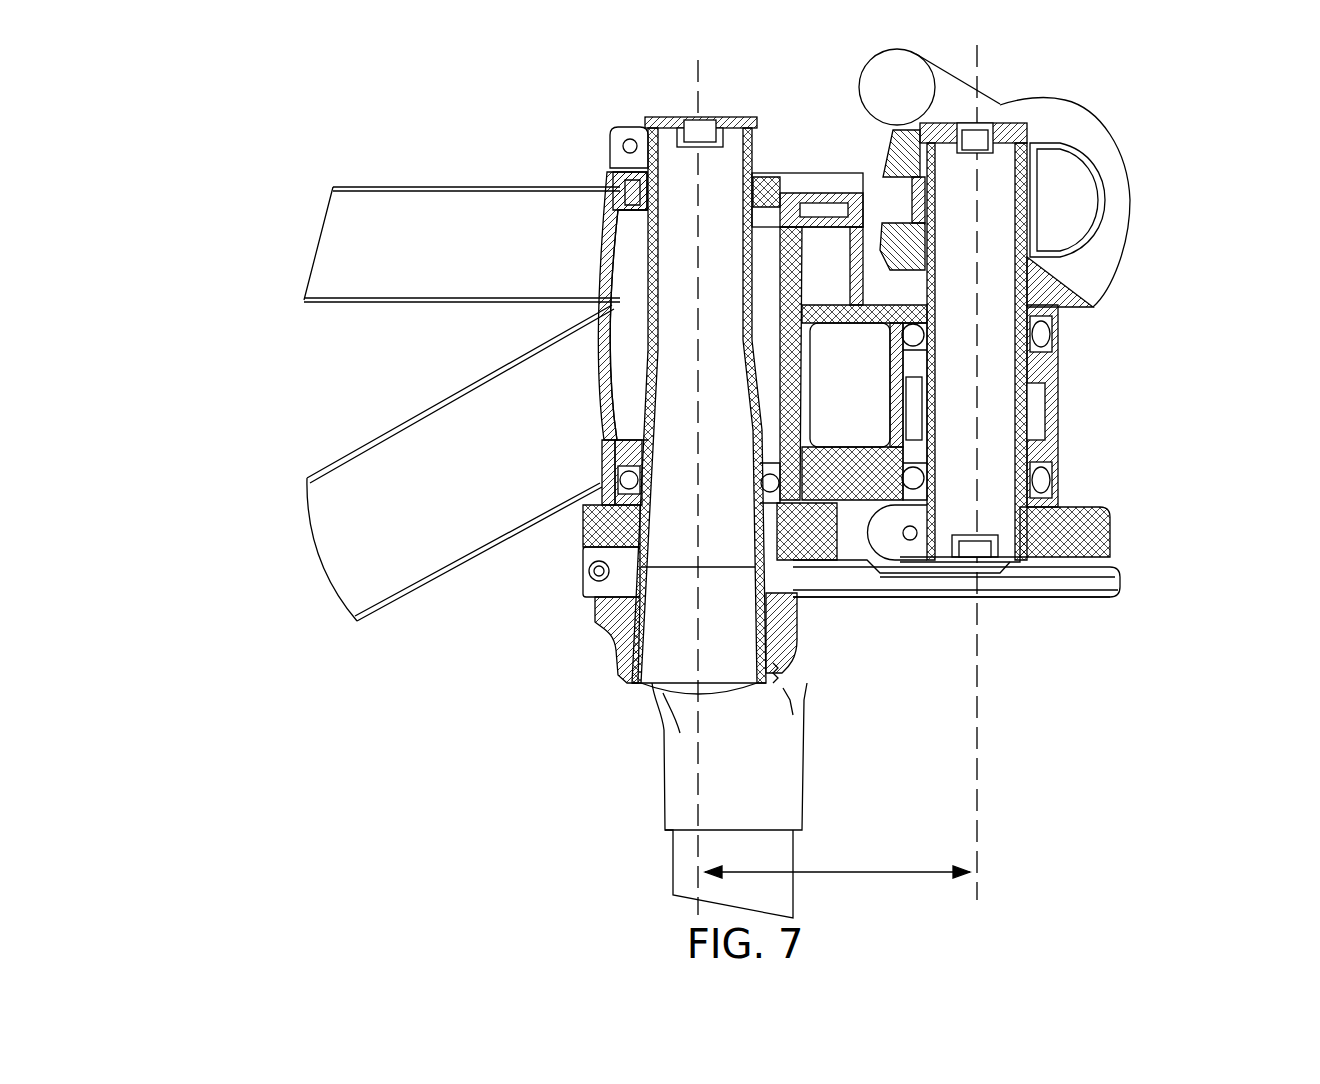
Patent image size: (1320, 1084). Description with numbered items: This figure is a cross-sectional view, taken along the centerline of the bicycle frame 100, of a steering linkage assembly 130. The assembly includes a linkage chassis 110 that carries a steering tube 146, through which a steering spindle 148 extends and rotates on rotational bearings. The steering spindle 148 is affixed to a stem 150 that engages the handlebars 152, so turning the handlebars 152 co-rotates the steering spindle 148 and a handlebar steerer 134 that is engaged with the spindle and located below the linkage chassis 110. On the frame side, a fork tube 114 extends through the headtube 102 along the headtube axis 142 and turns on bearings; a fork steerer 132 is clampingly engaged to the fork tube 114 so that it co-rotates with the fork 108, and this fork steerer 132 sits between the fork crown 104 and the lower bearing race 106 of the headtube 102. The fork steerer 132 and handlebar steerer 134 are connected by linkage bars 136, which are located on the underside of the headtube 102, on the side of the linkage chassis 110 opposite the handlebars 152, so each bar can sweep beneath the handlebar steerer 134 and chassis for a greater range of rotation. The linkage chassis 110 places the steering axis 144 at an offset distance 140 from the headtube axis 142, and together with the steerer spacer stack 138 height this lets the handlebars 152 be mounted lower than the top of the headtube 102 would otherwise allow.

The bicycle frame 100 is at (360, 298).
The headtube 102 is at (620, 202).
The fork crown 104 is at (790, 607).
The lower bearing race 106 is at (622, 481).
The fork 108 is at (677, 823).
The linkage chassis 110 is at (876, 305).
The fork tube 114 is at (648, 340).
The steering linkage assembly 130 is at (1072, 600).
The fork steerer 132 is at (593, 535).
The handlebar steerer 134 is at (1092, 532).
The linkage bars 136 is at (1007, 597).
The steerer spacer stack 138 is at (1030, 287).
The offset distance 140 is at (877, 872).
The headtube axis 142 is at (700, 791).
The steering axis 144 is at (980, 830).
The steering tube 146 is at (1023, 533).
The steering spindle 148 is at (1003, 387).
The stem 150 is at (907, 158).
The handlebars 152 is at (893, 72).